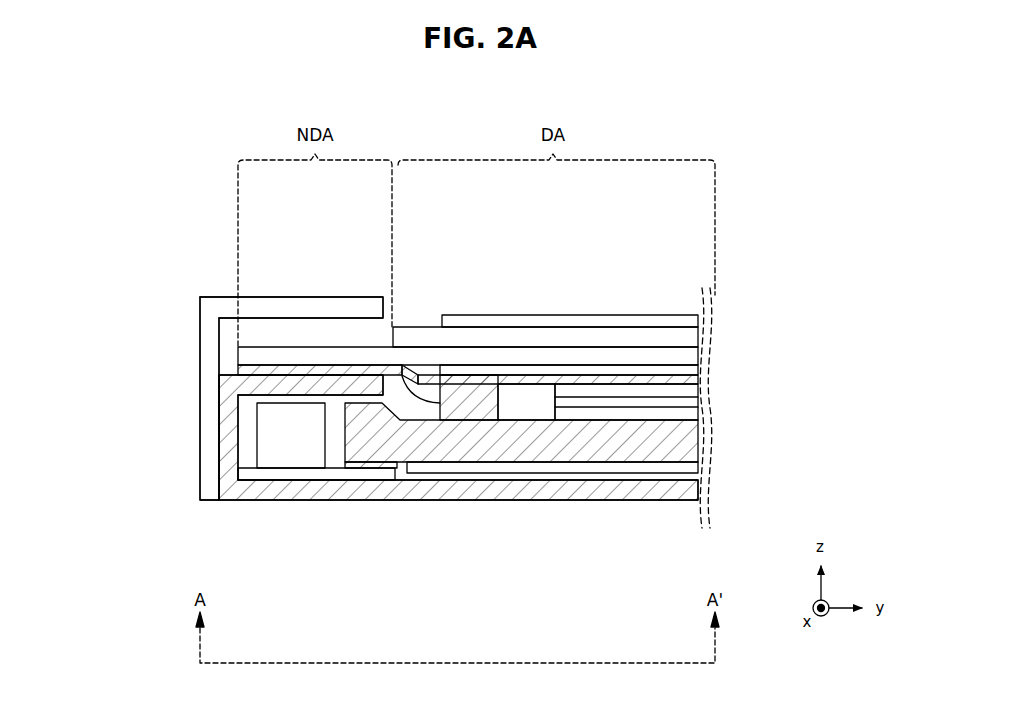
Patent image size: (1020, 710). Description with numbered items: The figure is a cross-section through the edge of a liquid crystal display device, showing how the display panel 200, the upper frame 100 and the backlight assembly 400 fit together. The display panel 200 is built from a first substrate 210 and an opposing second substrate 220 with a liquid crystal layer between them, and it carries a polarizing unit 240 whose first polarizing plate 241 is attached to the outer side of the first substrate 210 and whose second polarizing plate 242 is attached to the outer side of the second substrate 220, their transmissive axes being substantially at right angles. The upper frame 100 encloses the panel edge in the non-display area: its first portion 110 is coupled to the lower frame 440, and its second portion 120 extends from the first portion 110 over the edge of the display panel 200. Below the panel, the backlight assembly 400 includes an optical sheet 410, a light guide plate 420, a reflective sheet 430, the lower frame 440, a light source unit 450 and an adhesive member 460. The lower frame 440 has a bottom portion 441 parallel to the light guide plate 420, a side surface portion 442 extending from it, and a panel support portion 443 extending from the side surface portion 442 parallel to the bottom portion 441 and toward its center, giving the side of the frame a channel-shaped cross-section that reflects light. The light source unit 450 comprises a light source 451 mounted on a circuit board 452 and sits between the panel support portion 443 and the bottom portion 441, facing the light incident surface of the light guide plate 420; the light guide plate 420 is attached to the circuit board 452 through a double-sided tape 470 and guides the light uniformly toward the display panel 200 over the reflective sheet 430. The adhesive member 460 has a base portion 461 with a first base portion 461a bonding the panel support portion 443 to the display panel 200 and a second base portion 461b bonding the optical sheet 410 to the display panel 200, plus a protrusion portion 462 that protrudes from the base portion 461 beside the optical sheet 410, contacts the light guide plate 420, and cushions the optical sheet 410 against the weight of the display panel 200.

The upper frame 100 is at (135, 285).
The first portion 110 is at (211, 345).
The second portion 120 is at (228, 303).
The display panel 200 is at (625, 251).
The first substrate 210 is at (570, 359).
The second substrate 220 is at (612, 340).
The polarizing unit 240 is at (712, 251).
The first polarizing plate 241 is at (642, 370).
The second polarizing plate 242 is at (680, 322).
The backlight assembly 400 is at (778, 382).
The optical sheet 410 is at (604, 397).
The light guide plate 420 is at (690, 440).
The reflective sheet 430 is at (690, 465).
The lower frame 440 is at (690, 488).
The bottom portion 441 is at (262, 493).
The side surface portion 442 is at (228, 453).
The panel support portion 443 is at (258, 390).
The light source unit 450 is at (716, 537).
The light source 451 is at (290, 453).
The circuit board 452 is at (353, 473).
The adhesive member 460 is at (417, 207).
The base portion 461 is at (522, 251).
The first base portion 461a is at (427, 380).
The second base portion 461b is at (513, 382).
The protrusion portion 462 is at (402, 368).
The double-sided tape 470 is at (372, 462).